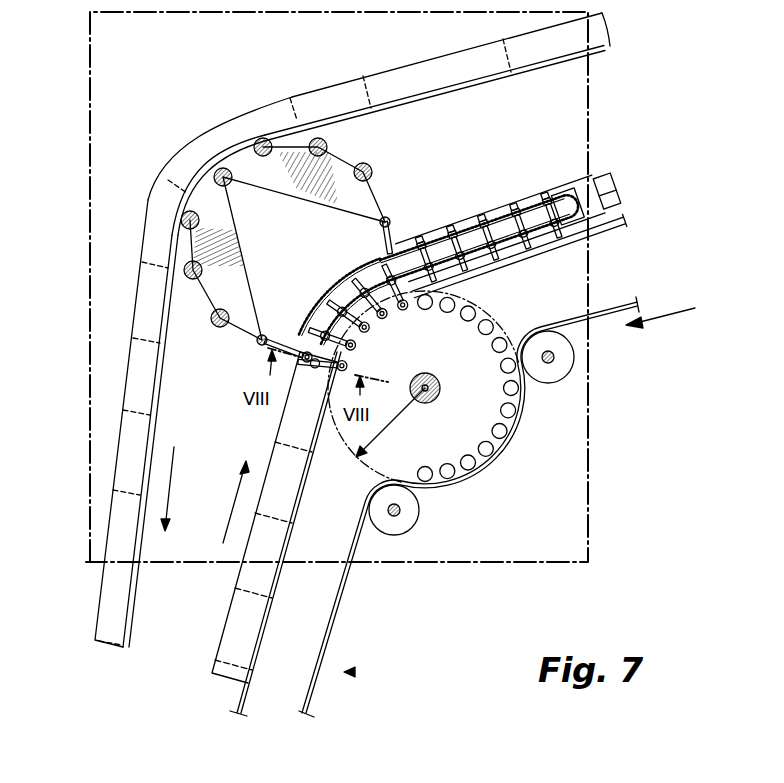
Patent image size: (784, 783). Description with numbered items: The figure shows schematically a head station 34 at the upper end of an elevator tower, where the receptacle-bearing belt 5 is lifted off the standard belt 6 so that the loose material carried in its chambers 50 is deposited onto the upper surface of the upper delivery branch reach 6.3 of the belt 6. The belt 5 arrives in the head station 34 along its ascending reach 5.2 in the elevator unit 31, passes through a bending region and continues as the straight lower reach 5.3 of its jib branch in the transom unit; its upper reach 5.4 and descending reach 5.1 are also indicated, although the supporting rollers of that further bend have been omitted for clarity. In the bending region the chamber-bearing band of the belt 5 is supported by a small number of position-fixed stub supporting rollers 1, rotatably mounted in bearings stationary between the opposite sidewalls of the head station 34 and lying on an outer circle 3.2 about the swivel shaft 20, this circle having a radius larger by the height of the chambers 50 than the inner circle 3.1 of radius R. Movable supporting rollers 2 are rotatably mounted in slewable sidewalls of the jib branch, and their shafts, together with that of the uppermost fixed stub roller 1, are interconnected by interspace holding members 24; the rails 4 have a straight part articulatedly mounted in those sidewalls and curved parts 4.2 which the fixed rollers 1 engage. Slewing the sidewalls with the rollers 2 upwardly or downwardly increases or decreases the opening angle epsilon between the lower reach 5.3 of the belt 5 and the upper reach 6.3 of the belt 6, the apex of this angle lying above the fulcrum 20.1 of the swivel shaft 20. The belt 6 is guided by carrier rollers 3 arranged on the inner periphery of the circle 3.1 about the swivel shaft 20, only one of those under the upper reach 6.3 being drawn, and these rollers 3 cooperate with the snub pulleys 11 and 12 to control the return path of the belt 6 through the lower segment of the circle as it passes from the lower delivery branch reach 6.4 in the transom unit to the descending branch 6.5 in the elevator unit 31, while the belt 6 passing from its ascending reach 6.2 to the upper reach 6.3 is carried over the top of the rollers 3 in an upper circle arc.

The fixed supporting rollers 1 is at (368, 268).
The movable supporting rollers 2 is at (421, 241).
The carrier rollers 3 is at (487, 326).
The inner circle 3.1 is at (367, 467).
The outer circle 3.2 is at (297, 340).
The rails 4 is at (439, 233).
The curved parts of the rails 4.2 is at (338, 281).
The receptacle-bearing belt 5 is at (153, 175).
The descending reach of the belt 5.1 is at (118, 535).
The ascending reach of the belt 5.2 is at (232, 643).
The lower reach of the belt 5.3 is at (594, 190).
The upper reach of the belt 5.4 is at (476, 68).
The standard belt 6 is at (353, 592).
The ascending reach of the standard belt 6.2 is at (265, 629).
The upper delivery branch reach 6.3 is at (603, 236).
The lower delivery branch reach 6.4 is at (612, 312).
The descending branch of the standard belt 6.5 is at (335, 638).
The snub pulley 11 is at (571, 371).
The snub pulley 12 is at (410, 523).
The swivel shaft 20 is at (438, 386).
The fulcrum of the swivel shaft 20.1 is at (430, 405).
The interspace holding members 24 is at (502, 213).
The elevator unit 31 is at (354, 672).
The head station 34 is at (588, 533).
The chambers 50 is at (163, 277).
The radius R is at (401, 416).